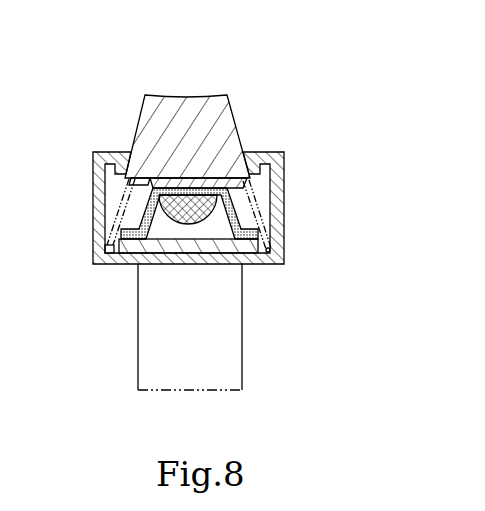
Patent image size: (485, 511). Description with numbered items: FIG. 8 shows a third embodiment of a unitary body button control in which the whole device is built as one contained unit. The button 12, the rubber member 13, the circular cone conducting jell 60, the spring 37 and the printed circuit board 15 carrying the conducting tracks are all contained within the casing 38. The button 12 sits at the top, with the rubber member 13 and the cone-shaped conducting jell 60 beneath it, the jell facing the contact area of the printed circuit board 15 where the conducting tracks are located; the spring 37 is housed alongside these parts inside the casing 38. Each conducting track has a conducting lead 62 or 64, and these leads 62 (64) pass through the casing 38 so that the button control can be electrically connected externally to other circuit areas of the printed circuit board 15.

The button 12 is at (188, 112).
The rubber member 13 is at (238, 211).
The printed circuit board 15 is at (222, 242).
The spring 37 is at (121, 203).
The casing 38 is at (284, 187).
The circular cone conducting jell 60 is at (181, 213).
The conducting lead 62 is at (243, 352).
The conducting lead 64 is at (243, 327).